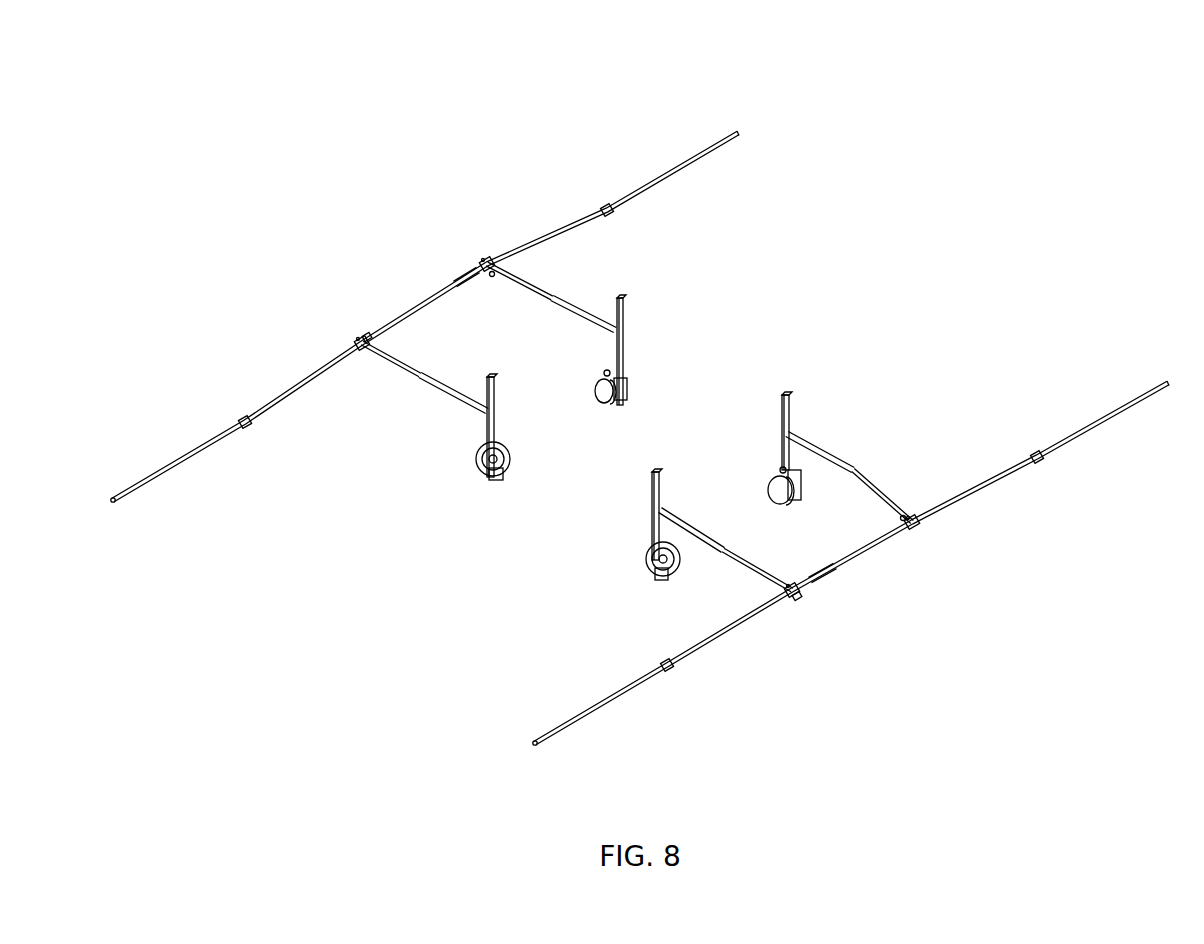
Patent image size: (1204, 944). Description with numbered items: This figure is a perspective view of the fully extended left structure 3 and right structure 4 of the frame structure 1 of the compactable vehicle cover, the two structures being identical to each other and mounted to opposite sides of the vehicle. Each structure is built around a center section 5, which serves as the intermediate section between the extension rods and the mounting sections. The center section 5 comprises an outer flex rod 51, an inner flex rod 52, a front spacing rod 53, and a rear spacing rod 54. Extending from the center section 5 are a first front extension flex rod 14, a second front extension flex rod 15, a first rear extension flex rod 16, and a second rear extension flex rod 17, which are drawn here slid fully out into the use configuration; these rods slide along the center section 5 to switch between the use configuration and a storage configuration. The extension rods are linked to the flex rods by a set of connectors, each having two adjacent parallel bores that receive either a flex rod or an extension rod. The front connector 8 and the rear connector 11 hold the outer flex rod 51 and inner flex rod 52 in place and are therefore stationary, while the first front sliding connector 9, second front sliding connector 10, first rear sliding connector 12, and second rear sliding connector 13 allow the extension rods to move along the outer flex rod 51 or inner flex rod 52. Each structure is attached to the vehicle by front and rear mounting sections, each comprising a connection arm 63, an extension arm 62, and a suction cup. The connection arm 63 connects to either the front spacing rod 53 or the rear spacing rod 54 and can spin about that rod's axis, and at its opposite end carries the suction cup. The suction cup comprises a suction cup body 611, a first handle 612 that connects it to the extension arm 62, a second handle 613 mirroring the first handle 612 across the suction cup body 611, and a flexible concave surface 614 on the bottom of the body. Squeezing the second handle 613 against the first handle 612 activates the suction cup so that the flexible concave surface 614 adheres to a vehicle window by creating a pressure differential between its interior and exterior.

The frame structure 1 is at (170, 80).
The left structure 3 is at (814, 130).
The right structure 4 is at (1132, 270).
The center section 5 is at (423, 232).
The front connector 8 is at (491, 277).
The first front sliding connector 9 is at (481, 264).
The second front sliding connector 10 is at (602, 205).
The rear connector 11 is at (355, 345).
The first rear sliding connector 12 is at (365, 335).
The second rear sliding connector 13 is at (246, 432).
The first front extension flex rod 14 is at (556, 236).
The second front extension flex rod 15 is at (722, 145).
The first rear extension flex rod 16 is at (258, 404).
The second rear extension flex rod 17 is at (118, 497).
The outer flex rod 51 is at (441, 287).
The inner flex rod 52 is at (470, 290).
The front spacing rod 53 is at (540, 288).
The rear spacing rod 54 is at (392, 368).
The extension arm 62 is at (626, 322).
The connection arm 63 is at (603, 316).
The suction cup body 611 is at (622, 405).
The first handle 612 is at (630, 386).
The second handle 613 is at (608, 376).
The flexible concave surface 614 is at (600, 398).